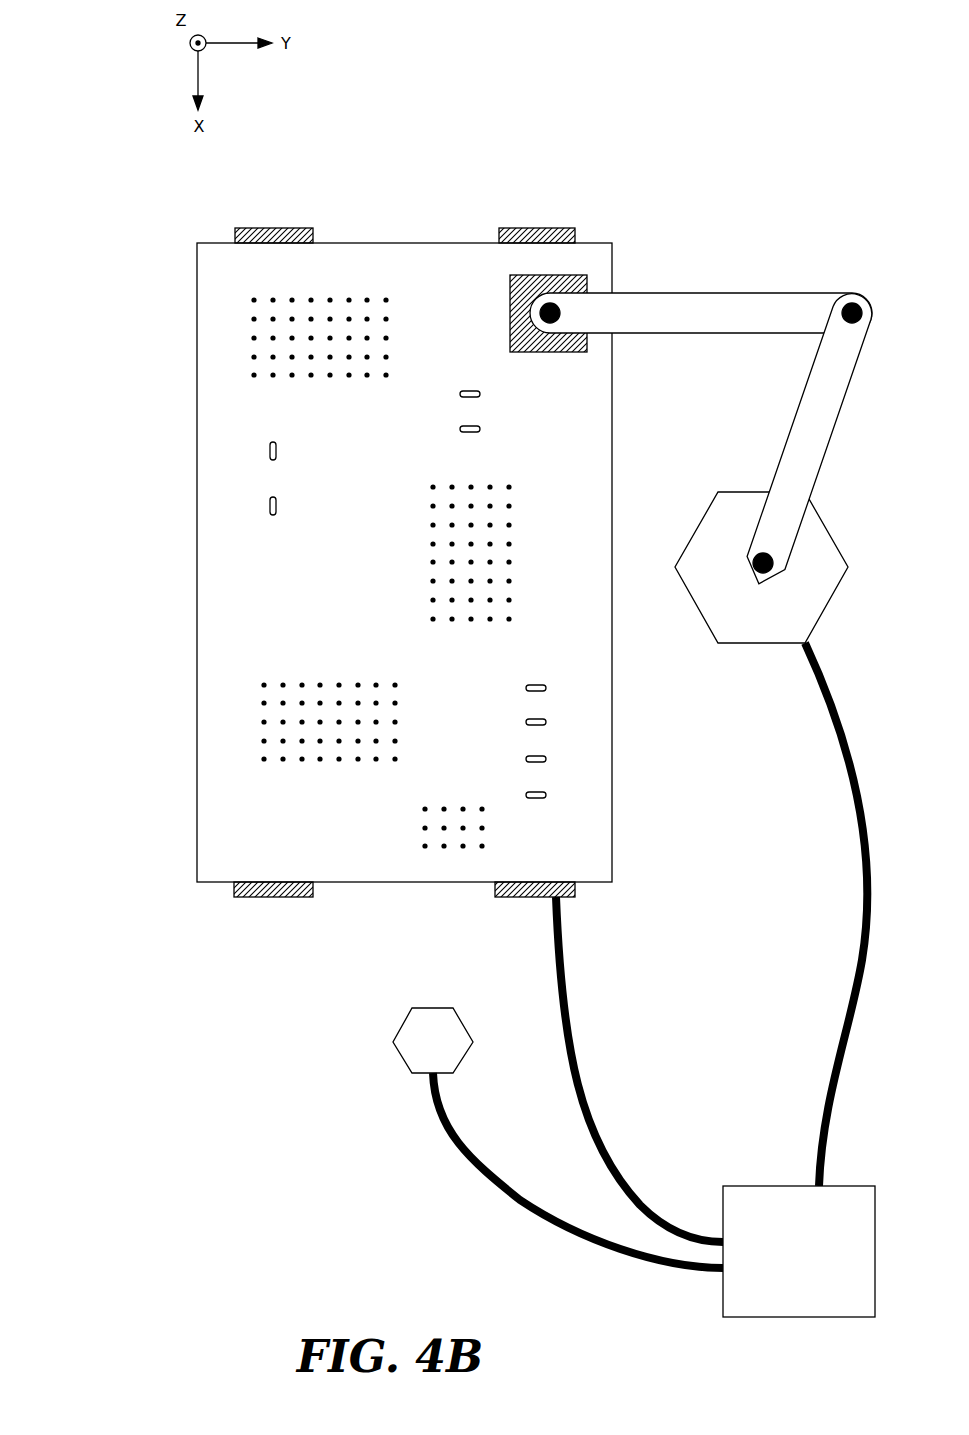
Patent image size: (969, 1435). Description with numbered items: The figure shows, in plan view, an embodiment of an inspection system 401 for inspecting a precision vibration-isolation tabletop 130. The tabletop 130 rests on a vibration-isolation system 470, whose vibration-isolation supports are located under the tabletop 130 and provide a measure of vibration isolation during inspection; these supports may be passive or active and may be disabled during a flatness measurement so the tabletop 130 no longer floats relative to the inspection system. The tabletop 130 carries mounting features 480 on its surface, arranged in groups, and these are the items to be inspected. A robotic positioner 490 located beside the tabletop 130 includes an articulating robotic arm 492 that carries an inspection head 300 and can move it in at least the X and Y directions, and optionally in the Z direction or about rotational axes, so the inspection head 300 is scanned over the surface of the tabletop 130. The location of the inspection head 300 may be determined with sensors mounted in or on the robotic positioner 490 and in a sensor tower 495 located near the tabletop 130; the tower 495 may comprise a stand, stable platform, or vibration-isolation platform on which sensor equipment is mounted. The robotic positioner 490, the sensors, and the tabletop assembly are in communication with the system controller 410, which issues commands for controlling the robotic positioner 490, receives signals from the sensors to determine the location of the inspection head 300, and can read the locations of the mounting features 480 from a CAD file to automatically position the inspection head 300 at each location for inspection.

The tabletop 130 is at (396, 902).
The inspection head 300 is at (509, 279).
The inspection system 401 is at (100, 1212).
The system controller 410 is at (654, 980).
The vibration-isolation system 470 is at (272, 898).
The mounting features 480 is at (537, 683).
The robotic positioner 490 is at (698, 612).
The articulating robotic arm 492 is at (806, 385).
The sensor tower 495 is at (405, 1027).